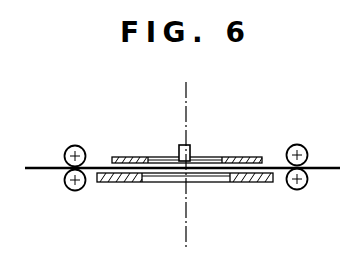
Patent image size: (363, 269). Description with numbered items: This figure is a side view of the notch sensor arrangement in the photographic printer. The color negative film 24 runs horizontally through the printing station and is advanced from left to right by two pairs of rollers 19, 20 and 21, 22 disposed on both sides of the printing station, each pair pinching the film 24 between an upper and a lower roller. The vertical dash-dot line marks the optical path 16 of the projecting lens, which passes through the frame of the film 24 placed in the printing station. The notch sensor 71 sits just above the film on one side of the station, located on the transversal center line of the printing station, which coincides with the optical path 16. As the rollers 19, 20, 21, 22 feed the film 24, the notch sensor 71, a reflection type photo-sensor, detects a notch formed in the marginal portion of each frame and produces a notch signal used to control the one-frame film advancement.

The optical path 16 is at (184, 98).
The roller 19 is at (74, 191).
The roller 20 is at (75, 145).
The roller 21 is at (297, 190).
The roller 22 is at (296, 144).
The color negative film 24 is at (246, 156).
The notch sensor 71 is at (180, 151).